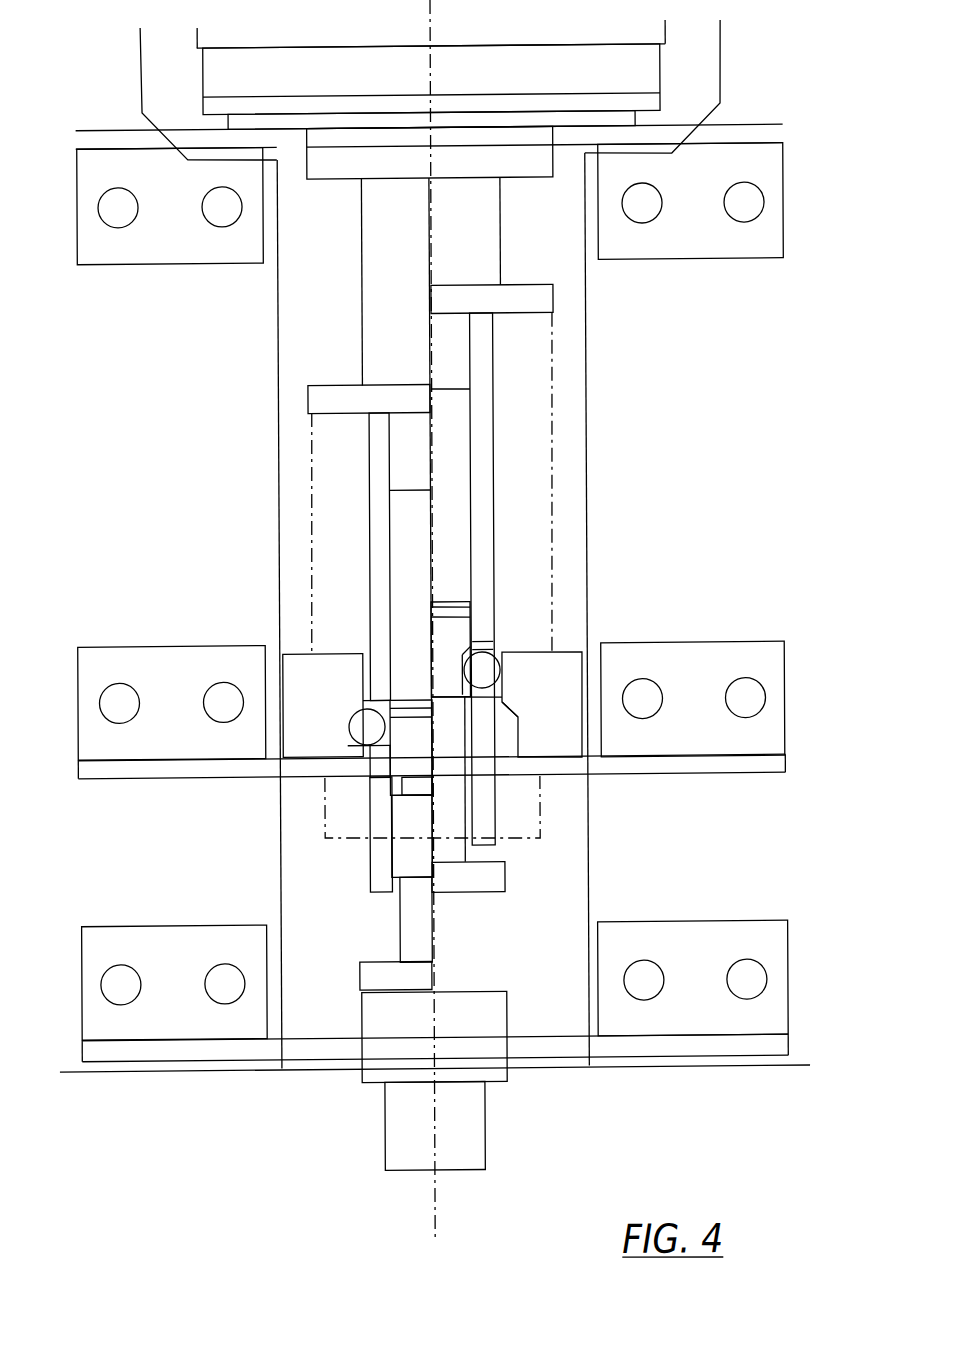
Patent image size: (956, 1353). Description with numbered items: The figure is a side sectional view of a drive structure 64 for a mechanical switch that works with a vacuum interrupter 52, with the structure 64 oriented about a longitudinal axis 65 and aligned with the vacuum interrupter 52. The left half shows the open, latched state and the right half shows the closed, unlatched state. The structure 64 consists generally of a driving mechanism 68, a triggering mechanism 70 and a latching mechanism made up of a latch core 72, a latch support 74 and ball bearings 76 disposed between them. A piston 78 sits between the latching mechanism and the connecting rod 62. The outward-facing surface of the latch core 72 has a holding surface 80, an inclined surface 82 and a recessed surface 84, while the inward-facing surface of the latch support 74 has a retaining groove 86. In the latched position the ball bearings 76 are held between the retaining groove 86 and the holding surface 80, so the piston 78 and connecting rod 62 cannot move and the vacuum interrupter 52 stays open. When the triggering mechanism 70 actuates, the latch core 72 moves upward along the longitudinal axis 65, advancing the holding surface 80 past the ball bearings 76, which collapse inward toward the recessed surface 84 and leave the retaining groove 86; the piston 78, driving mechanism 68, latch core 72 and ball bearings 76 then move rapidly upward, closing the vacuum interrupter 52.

The vacuum interrupter 52 is at (418, 87).
The connecting rod 62 is at (376, 266).
The structure 64 is at (748, 539).
The longitudinal axis 65 is at (432, 1207).
The driving mechanism 68 is at (370, 974).
The triggering mechanism 70 is at (496, 1018).
The latch core 72 is at (397, 747).
The latch support 74 is at (293, 654).
The ball bearings 76 is at (347, 722).
The piston 78 is at (381, 468).
The holding surface 80 is at (389, 737).
The inclined surface 82 is at (364, 756).
The recessed surface 84 is at (401, 783).
The retaining groove 86 is at (509, 729).